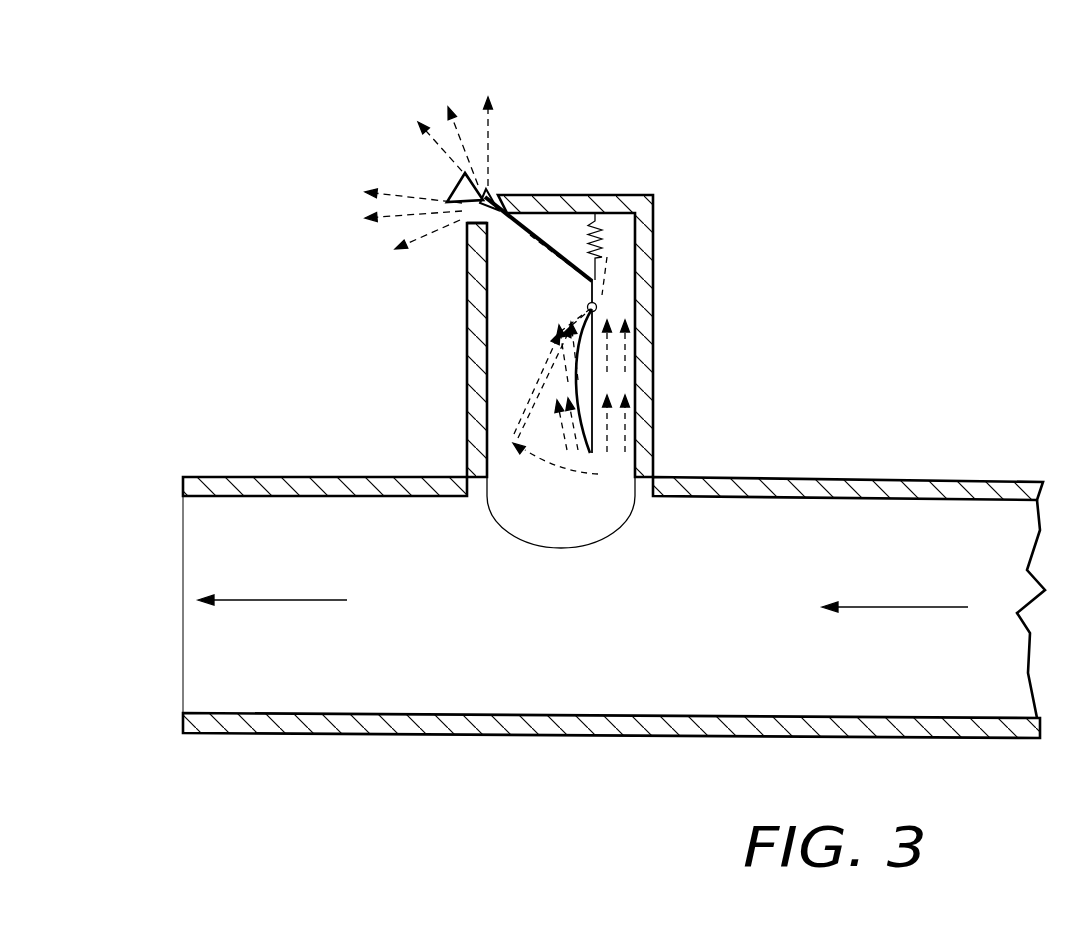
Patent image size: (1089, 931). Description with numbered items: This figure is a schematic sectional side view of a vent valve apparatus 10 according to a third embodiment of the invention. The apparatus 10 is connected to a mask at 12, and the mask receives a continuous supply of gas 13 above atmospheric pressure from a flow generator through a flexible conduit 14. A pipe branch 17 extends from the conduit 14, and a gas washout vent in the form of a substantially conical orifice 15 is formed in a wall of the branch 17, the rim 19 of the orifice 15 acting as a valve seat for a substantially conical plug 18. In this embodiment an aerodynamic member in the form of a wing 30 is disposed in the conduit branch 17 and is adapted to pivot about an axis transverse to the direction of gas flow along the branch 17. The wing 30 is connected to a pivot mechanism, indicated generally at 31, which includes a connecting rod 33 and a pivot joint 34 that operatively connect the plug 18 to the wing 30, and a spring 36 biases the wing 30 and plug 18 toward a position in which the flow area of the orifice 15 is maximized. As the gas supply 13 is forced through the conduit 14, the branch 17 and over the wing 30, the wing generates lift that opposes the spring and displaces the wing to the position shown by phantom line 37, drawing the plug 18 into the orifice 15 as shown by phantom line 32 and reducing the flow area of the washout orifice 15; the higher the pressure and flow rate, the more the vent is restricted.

The vent valve apparatus 10 is at (720, 137).
The mask connection 12 is at (343, 675).
The supply of gas 13 is at (930, 607).
The flexible conduit 14 is at (973, 482).
The conical orifice 15 is at (493, 190).
The pipe branch 17 is at (467, 322).
The conical plug 18 is at (450, 192).
The rim of the orifice 19 is at (480, 228).
The wing 30 is at (583, 392).
The pivot mechanism 31 is at (610, 300).
The phantom line 32 is at (497, 195).
The connecting rod 33 is at (592, 290).
The pivot joint 34 is at (590, 308).
The spring 36 is at (605, 241).
The phantom line 37 is at (527, 390).